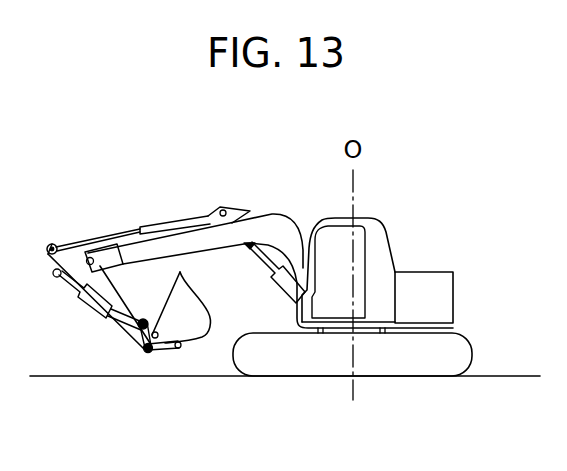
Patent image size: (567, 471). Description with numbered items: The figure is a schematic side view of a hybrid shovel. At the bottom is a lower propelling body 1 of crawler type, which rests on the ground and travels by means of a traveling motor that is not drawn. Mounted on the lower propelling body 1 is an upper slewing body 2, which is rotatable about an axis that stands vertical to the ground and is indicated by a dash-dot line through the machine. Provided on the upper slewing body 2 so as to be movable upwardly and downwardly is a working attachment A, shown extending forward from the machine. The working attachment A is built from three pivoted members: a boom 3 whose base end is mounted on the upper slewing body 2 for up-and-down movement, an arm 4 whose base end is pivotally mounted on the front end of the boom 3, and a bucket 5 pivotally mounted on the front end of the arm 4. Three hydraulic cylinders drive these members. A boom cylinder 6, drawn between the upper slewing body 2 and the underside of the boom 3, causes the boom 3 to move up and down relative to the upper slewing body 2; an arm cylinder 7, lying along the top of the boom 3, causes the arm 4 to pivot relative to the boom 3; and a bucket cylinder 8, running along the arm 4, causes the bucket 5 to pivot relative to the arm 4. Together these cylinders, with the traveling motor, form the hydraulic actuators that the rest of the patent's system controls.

The lower propelling body 1 is at (380, 378).
The upper slewing body 2 is at (386, 220).
The boom 3 is at (275, 213).
The arm 4 is at (78, 298).
The bucket 5 is at (196, 338).
The boom cylinder 6 is at (272, 284).
The arm cylinder 7 is at (163, 220).
The bucket cylinder 8 is at (104, 313).
The working attachment A is at (118, 227).